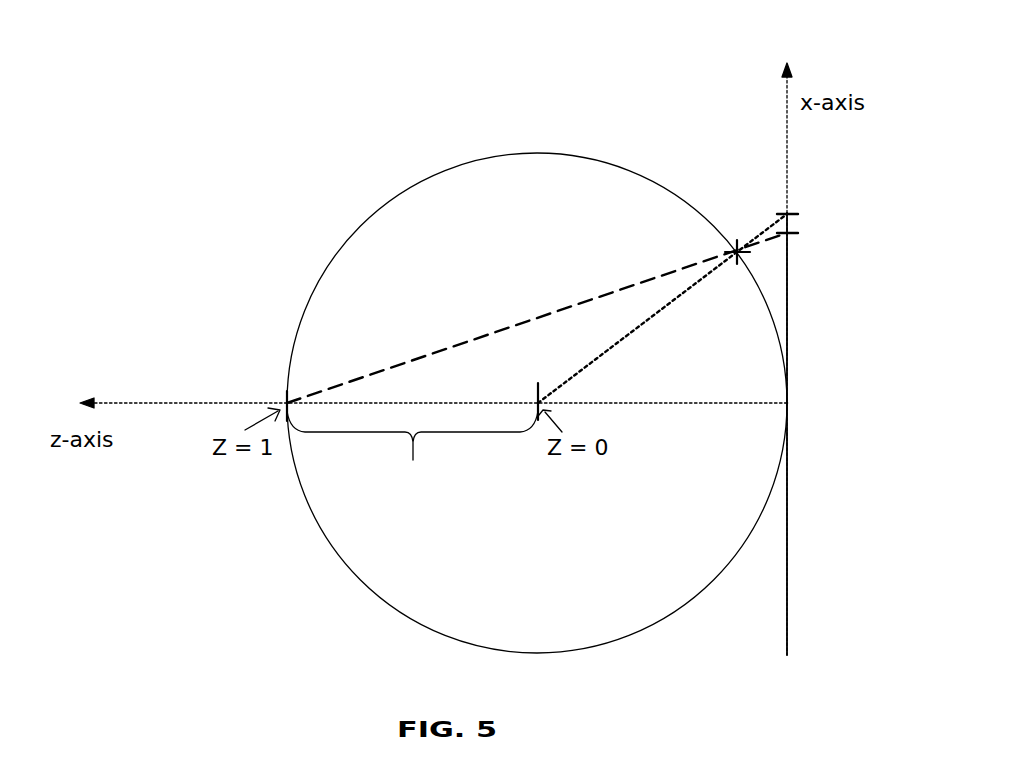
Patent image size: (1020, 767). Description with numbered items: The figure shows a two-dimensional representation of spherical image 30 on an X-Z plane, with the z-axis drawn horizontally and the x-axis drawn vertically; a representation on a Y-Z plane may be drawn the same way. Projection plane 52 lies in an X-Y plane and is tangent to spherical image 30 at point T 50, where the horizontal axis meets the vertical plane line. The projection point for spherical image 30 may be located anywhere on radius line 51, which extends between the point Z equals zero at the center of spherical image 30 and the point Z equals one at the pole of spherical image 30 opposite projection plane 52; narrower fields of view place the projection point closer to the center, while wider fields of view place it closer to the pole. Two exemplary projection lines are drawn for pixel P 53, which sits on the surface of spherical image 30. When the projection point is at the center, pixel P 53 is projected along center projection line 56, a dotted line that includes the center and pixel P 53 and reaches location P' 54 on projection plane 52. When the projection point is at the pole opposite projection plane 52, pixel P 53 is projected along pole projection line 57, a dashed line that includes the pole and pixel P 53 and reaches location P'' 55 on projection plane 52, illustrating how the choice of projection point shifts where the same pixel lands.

The spherical image 30 is at (388, 168).
The point T 50 is at (833, 429).
The radius line 51 is at (412, 451).
The projection plane 52 is at (765, 130).
The pixel P 53 is at (727, 230).
The location P' 54 is at (835, 189).
The location P'' 55 is at (836, 270).
The center projection line 56 is at (616, 321).
The pole projection line 57 is at (368, 356).